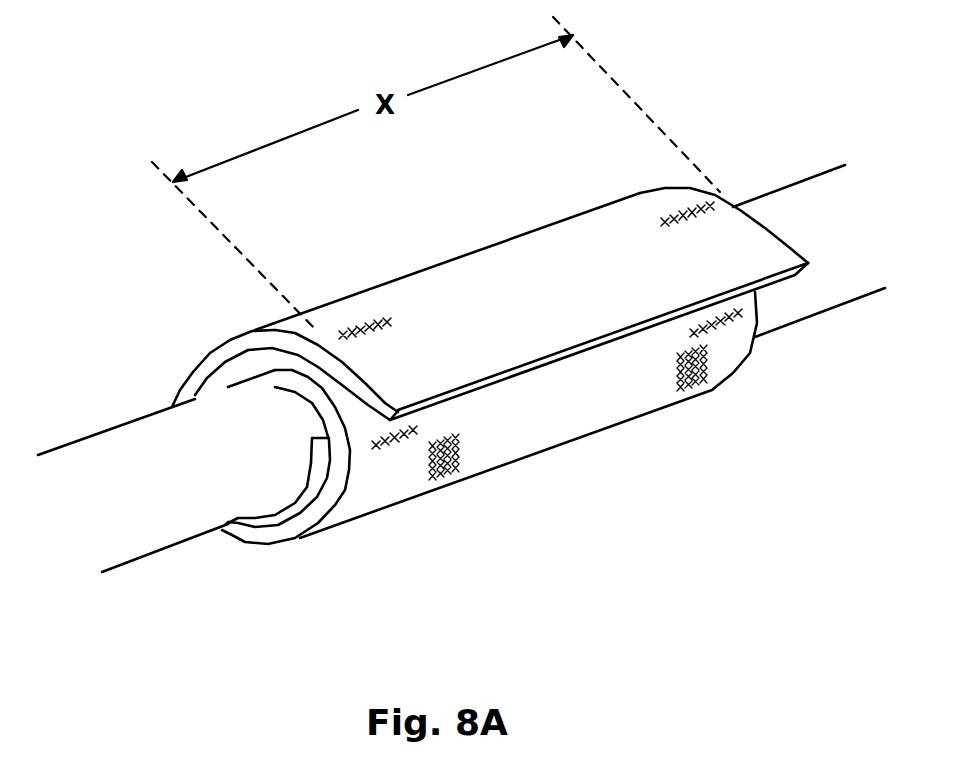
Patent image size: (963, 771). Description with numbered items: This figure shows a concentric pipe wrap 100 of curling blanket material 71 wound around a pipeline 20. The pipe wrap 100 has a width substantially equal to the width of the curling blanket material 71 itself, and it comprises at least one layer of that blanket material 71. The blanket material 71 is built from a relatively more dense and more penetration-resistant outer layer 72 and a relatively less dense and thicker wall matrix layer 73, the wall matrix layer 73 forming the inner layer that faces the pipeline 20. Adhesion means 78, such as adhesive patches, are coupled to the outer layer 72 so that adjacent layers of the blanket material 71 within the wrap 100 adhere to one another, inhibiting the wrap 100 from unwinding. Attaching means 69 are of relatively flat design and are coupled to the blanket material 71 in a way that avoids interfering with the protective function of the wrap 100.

The pipeline 20 is at (87, 437).
The concentric pipe wrap 100 is at (187, 268).
The attaching means 69 is at (360, 323).
The curling blanket material 71 is at (368, 287).
The outer layer 72 is at (552, 247).
The wall matrix layer 73 is at (252, 534).
The adhesion means 78 is at (693, 377).